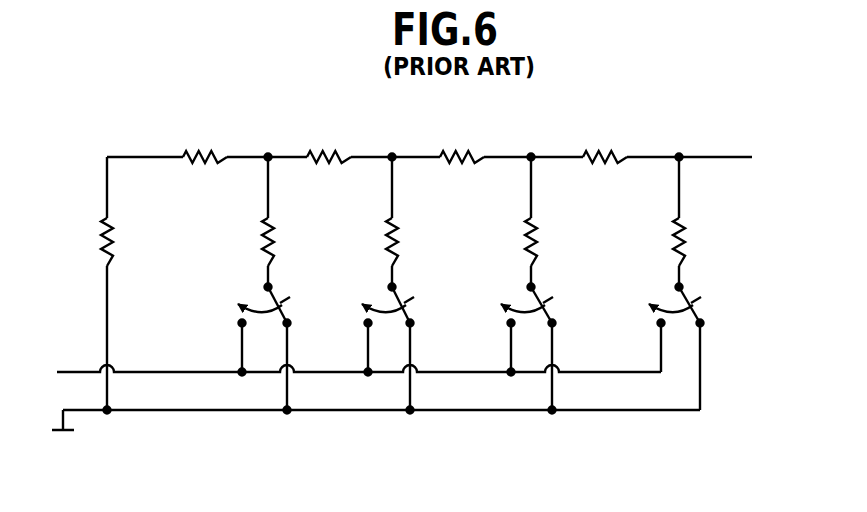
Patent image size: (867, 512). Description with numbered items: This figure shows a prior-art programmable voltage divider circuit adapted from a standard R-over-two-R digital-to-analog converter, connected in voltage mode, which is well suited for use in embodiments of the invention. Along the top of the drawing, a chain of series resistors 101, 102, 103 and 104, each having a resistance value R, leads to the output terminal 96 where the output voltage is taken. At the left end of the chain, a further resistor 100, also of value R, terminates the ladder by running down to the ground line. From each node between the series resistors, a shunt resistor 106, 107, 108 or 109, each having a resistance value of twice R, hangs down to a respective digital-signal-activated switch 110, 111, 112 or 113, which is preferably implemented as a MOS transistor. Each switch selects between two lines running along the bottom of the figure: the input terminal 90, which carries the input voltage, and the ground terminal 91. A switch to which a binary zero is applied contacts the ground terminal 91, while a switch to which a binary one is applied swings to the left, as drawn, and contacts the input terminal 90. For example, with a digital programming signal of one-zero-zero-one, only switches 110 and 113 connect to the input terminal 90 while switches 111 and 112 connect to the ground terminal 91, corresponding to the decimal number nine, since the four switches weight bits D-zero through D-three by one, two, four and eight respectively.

The input terminal 90 is at (74, 368).
The ground terminal 91 is at (80, 412).
The output terminal 96 is at (715, 154).
The resistor 100 is at (97, 246).
The resistor 101 is at (200, 148).
The resistor 102 is at (324, 148).
The resistor 103 is at (456, 148).
The resistor 104 is at (599, 148).
The resistor 106 is at (276, 239).
The resistor 107 is at (400, 238).
The resistor 108 is at (540, 238).
The resistor 109 is at (688, 238).
The digital-signal-activated switch 110 is at (276, 298).
The digital-signal-activated switch 111 is at (400, 298).
The digital-signal-activated switch 112 is at (539, 298).
The digital-signal-activated switch 113 is at (687, 298).